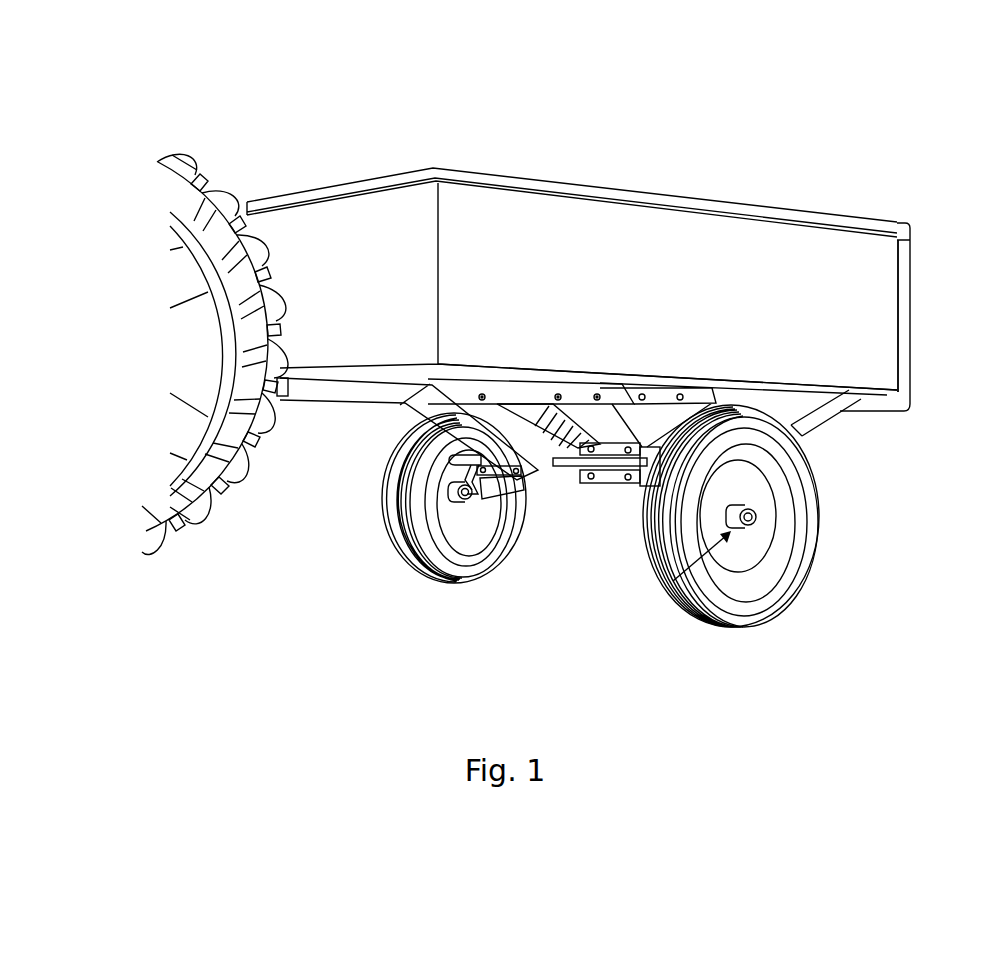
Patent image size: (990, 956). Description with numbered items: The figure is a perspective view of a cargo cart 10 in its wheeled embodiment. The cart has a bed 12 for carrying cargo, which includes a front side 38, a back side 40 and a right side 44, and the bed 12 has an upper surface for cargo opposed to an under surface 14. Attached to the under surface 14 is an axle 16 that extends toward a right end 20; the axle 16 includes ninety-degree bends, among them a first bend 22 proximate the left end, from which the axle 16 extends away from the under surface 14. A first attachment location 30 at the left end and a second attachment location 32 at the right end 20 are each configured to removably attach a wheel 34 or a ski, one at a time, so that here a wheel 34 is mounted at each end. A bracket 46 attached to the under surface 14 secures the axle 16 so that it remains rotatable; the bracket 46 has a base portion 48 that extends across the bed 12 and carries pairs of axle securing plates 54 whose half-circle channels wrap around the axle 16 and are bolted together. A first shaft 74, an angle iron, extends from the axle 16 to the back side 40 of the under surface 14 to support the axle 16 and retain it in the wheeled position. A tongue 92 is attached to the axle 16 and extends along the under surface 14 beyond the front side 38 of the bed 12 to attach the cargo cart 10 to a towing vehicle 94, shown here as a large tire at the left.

The cargo cart 10 is at (562, 102).
The bed 12 is at (593, 211).
The under surface 14 is at (371, 374).
The axle 16 is at (560, 474).
The right end 20 is at (760, 518).
The first bend 22 is at (457, 462).
The first attachment location 30 is at (452, 512).
The second attachment location 32 is at (664, 592).
The wheel 34 is at (422, 532).
The front side 38 is at (325, 217).
The back side 40 is at (908, 318).
The right side 44 is at (692, 258).
The bracket 46 is at (583, 383).
The base portion 48 is at (514, 390).
The axle securing plates 54 is at (622, 441).
The first shaft 74 is at (817, 421).
The tongue 92 is at (303, 394).
The vehicle 94 is at (178, 182).